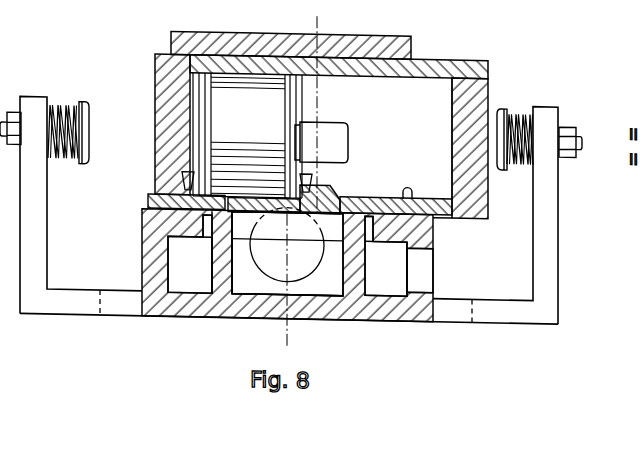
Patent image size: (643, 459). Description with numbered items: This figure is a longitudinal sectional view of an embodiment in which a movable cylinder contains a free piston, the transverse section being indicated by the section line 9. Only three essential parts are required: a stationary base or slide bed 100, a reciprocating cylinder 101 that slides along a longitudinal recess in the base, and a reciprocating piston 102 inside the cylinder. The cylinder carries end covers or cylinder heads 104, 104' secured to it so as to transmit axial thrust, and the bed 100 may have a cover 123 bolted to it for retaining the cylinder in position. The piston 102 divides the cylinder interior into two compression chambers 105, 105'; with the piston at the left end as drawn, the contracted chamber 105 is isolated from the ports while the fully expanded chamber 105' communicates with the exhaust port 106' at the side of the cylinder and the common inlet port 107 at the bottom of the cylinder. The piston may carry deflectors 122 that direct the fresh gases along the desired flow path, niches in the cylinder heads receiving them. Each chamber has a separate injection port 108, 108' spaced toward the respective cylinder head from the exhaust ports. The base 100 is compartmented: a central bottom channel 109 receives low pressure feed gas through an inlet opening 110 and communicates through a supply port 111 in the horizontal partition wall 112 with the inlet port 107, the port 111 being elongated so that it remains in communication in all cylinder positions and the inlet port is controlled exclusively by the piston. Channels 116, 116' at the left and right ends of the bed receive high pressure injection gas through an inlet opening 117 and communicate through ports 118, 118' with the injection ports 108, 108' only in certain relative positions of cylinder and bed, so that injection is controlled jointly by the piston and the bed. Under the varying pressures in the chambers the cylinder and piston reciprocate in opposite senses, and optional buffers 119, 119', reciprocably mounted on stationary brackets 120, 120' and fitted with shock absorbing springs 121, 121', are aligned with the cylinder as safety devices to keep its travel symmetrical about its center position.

The base 100 is at (414, 316).
The cylinder 101 is at (434, 59).
The piston 102 is at (241, 91).
The cylinder head 104 is at (154, 123).
The cylinder head 104' is at (486, 144).
The compression chamber 105 is at (219, 102).
The compression chamber 105' is at (415, 138).
The exhaust port 106' is at (344, 143).
The inlet port 107 is at (336, 188).
The injection port 108 is at (159, 206).
The injection port 108' is at (423, 183).
The channel 109 is at (250, 288).
The inlet opening 110 is at (287, 251).
The supply port 111 is at (218, 282).
The partition wall 112 is at (399, 196).
The channel 116 is at (190, 264).
The channel 116' is at (386, 268).
The inlet opening 117 is at (428, 255).
The port 118 is at (152, 228).
The port 118' is at (418, 231).
The buffer 119 is at (96, 114).
The buffer 119' is at (508, 155).
The bracket 120 is at (71, 206).
The bracket 120' is at (515, 215).
The shock absorbing spring 121 is at (55, 110).
The shock absorbing spring 121' is at (541, 119).
The deflector 122 is at (183, 180).
The cover 123 is at (376, 42).
The section line 9 is at (317, 16).